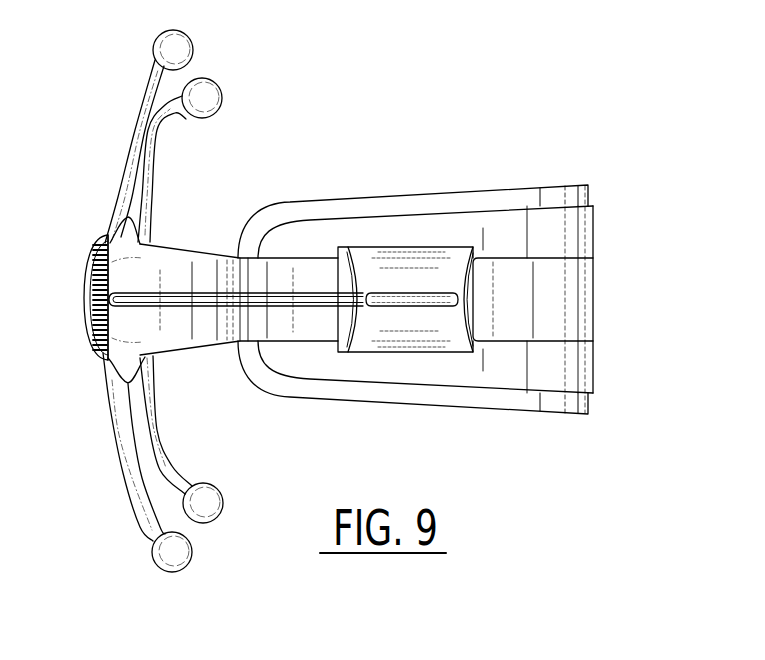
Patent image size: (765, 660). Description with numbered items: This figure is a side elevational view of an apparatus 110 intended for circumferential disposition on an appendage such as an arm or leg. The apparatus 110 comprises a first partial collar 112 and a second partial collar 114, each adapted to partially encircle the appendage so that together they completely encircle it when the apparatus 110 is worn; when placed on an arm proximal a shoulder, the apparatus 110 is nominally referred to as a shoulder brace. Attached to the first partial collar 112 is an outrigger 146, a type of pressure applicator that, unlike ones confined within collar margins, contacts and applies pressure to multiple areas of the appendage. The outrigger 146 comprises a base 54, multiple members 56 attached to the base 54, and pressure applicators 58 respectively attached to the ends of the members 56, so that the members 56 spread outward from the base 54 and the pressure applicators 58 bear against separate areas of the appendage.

The apparatus 110 is at (524, 105).
The first partial collar 112 is at (181, 250).
The second partial collar 114 is at (578, 229).
The outrigger 146 is at (110, 238).
The base 54 is at (170, 348).
The members 56 is at (146, 456).
The pressure applicators 58 is at (207, 504).